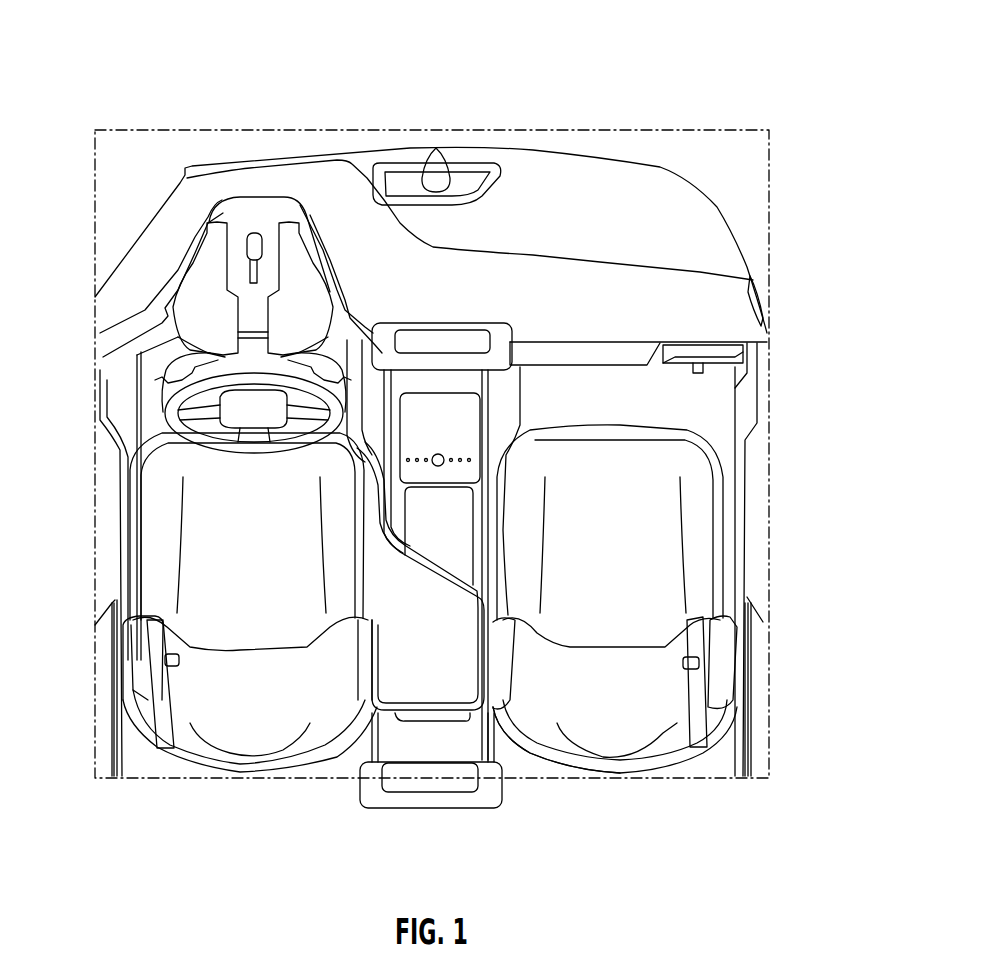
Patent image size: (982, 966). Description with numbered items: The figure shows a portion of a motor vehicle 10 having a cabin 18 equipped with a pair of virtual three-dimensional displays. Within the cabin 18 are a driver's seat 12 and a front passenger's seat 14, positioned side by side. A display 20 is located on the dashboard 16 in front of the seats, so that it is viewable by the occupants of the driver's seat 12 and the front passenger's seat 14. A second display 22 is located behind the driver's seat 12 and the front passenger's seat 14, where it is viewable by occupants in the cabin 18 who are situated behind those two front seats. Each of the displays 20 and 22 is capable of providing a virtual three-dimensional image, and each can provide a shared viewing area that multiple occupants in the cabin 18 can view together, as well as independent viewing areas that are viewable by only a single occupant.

The motor vehicle 10 is at (749, 44).
The driver's seat 12 is at (157, 520).
The front passenger's seat 14 is at (697, 490).
The dashboard 16 is at (553, 352).
The cabin 18 is at (538, 772).
The display 20 is at (430, 333).
The second display 22 is at (452, 800).